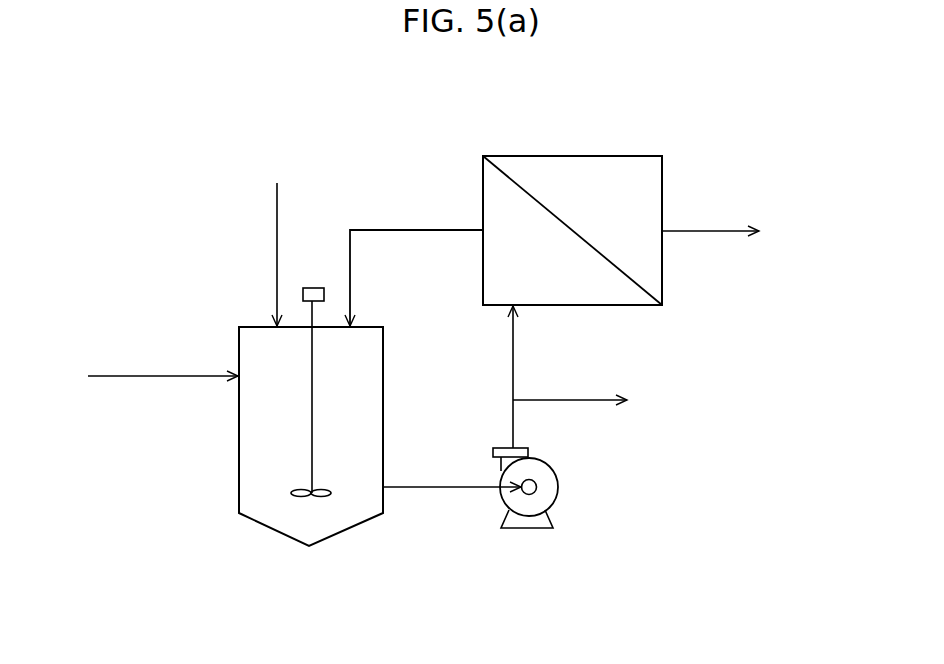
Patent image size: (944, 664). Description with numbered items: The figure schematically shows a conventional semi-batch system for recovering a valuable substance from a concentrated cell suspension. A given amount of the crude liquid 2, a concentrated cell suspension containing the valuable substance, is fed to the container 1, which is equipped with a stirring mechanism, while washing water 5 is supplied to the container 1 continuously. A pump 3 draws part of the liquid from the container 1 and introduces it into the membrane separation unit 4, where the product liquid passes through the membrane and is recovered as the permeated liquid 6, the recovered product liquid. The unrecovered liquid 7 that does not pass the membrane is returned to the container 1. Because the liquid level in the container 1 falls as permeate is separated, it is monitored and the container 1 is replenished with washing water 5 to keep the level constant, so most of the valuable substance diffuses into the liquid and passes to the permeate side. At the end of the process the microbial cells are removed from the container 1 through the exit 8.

The container 1 is at (340, 513).
The crude liquid 2 is at (150, 377).
The pump 3 is at (548, 480).
The membrane separation unit 4 is at (643, 210).
The washing water 5 is at (276, 237).
The permeated liquid 6 is at (724, 230).
The unrecovered liquid 7 is at (414, 259).
The exit 8 is at (583, 400).